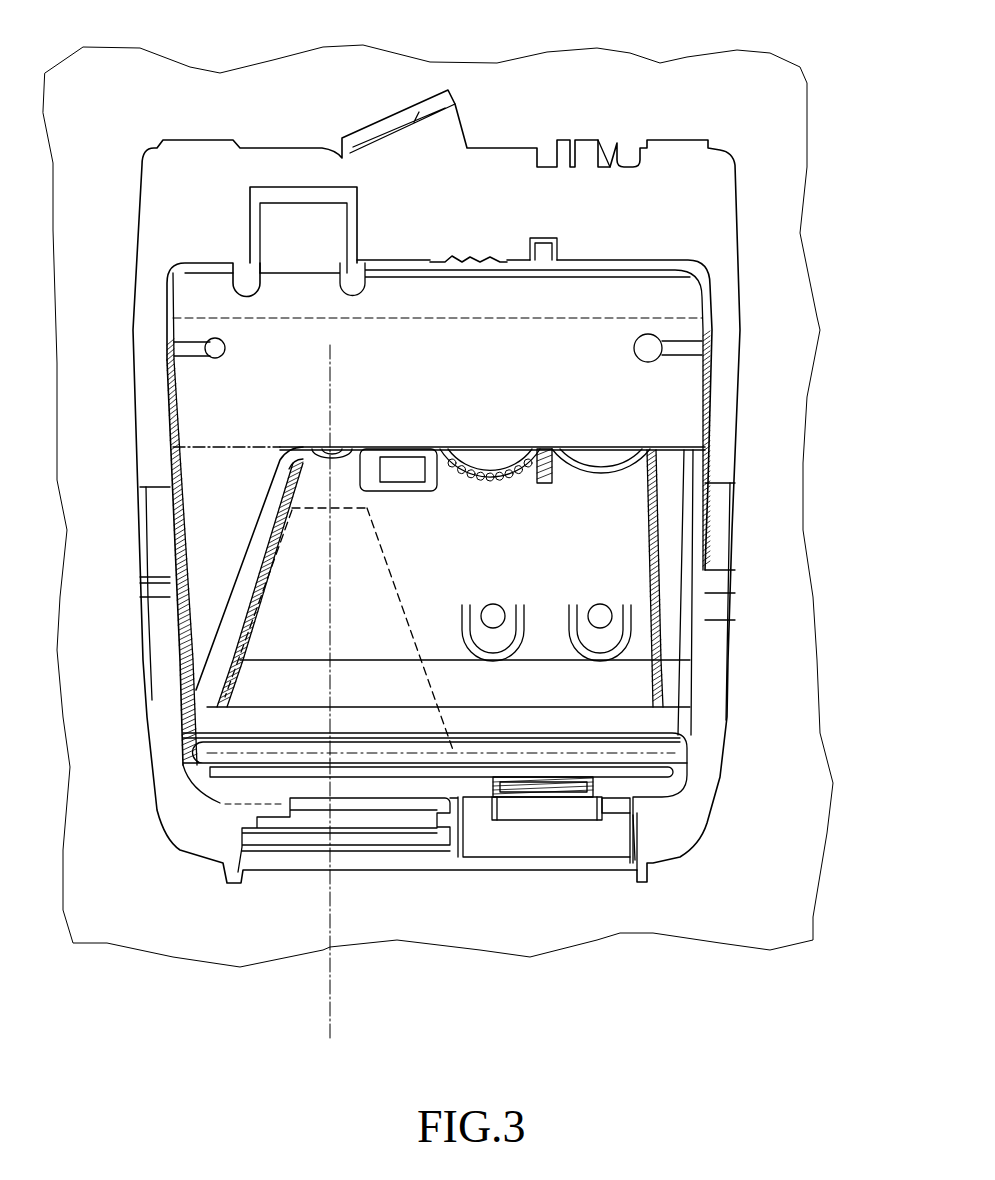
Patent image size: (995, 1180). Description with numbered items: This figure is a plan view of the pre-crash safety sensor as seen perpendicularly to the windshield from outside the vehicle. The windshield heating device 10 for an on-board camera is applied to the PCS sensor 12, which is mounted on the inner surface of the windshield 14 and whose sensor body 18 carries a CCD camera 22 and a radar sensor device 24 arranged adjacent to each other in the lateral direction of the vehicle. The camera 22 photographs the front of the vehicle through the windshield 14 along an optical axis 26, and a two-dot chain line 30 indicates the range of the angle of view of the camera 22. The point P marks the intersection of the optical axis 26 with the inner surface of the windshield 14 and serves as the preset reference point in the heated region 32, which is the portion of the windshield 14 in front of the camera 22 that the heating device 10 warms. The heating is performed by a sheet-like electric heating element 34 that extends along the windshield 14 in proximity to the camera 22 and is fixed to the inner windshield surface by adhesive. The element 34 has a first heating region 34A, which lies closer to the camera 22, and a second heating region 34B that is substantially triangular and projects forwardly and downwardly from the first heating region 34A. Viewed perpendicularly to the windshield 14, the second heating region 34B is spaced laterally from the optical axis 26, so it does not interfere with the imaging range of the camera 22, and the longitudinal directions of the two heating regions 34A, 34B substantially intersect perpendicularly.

The windshield heating device 10 is at (461, 613).
The PCS sensor 12 is at (737, 511).
The windshield 14 is at (647, 88).
The sensor body 18 is at (700, 623).
The CCD camera 22 is at (345, 472).
The radar sensor device 24 is at (543, 492).
The optical axis 26 is at (328, 1000).
The two-dot chain line 30 is at (393, 572).
The heated region 32 is at (358, 626).
The electric heating element 34 is at (690, 393).
The first heating region 34A is at (402, 340).
The second heating region 34B is at (187, 512).
The point P is at (328, 551).